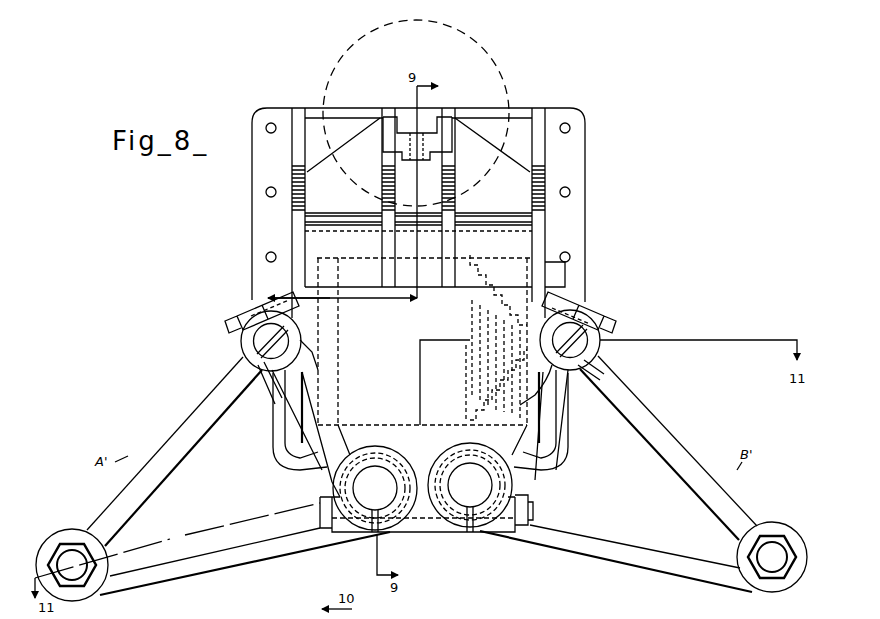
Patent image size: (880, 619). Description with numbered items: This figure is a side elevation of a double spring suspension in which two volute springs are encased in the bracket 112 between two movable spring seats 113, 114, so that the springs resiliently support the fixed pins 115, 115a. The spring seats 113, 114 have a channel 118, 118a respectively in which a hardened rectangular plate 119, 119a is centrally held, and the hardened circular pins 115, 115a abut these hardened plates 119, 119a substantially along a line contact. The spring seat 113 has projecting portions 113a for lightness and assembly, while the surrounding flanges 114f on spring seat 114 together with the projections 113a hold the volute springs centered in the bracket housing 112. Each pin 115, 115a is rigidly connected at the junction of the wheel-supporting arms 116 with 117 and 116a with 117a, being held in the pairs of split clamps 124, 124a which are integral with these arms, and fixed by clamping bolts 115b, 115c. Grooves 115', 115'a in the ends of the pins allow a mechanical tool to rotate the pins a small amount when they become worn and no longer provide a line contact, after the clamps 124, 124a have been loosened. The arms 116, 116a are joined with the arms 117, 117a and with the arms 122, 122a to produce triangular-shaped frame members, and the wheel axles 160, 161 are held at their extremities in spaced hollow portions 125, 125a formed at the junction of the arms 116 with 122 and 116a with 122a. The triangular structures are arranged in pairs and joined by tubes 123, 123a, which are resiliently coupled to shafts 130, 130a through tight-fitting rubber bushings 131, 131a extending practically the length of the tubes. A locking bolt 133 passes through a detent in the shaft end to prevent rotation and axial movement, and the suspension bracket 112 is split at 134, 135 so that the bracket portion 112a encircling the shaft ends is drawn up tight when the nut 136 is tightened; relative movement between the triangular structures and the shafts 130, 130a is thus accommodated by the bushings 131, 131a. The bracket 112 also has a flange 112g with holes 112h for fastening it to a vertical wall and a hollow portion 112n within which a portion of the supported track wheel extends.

The bracket 112 is at (441, 213).
The suspension bracket portion 112a is at (423, 533).
The flange 112g is at (580, 154).
The holes 112h is at (571, 193).
The hollow portion 112n is at (418, 213).
The spring seat 113 is at (518, 266).
The projecting portions 113a is at (468, 323).
The spring seat 114 is at (328, 283).
The surrounding flanges 114f is at (328, 255).
The fixed pin 115 is at (594, 357).
The groove 115' is at (601, 340).
The fixed pin 115a is at (273, 341).
The groove 115'a is at (304, 342).
The clamping bolt 115b is at (612, 323).
The clamping bolt 115c is at (226, 326).
The wheel-supporting arm 116 is at (700, 412).
The wheel-supporting arm 116a is at (186, 404).
The wheel-supporting arm 117 is at (560, 452).
The wheel-supporting arm 117a is at (290, 456).
The channel 118 is at (578, 372).
The channel 118a is at (286, 392).
The hardened rectangular plate 119 is at (528, 392).
The hardened rectangular plate 119a is at (302, 350).
The supporting arm 122 is at (630, 560).
The supporting arm 122a is at (221, 566).
The tube 123 is at (489, 533).
The tube 123a is at (352, 528).
The split clamp 124 is at (597, 353).
The split clamp 124a is at (266, 370).
The hollow portion 125 is at (765, 591).
The hollow portion 125a is at (92, 598).
The shaft 130 is at (493, 493).
The shaft 130a is at (352, 496).
The resilient rubber bushing 131 is at (510, 484).
The resilient rubber bushing 131a is at (358, 490).
The locking bolt 133 is at (534, 515).
The split 134 is at (460, 533).
The split 135 is at (378, 535).
The nut 136 is at (536, 504).
The axle 160 is at (760, 552).
The axle 161 is at (92, 562).